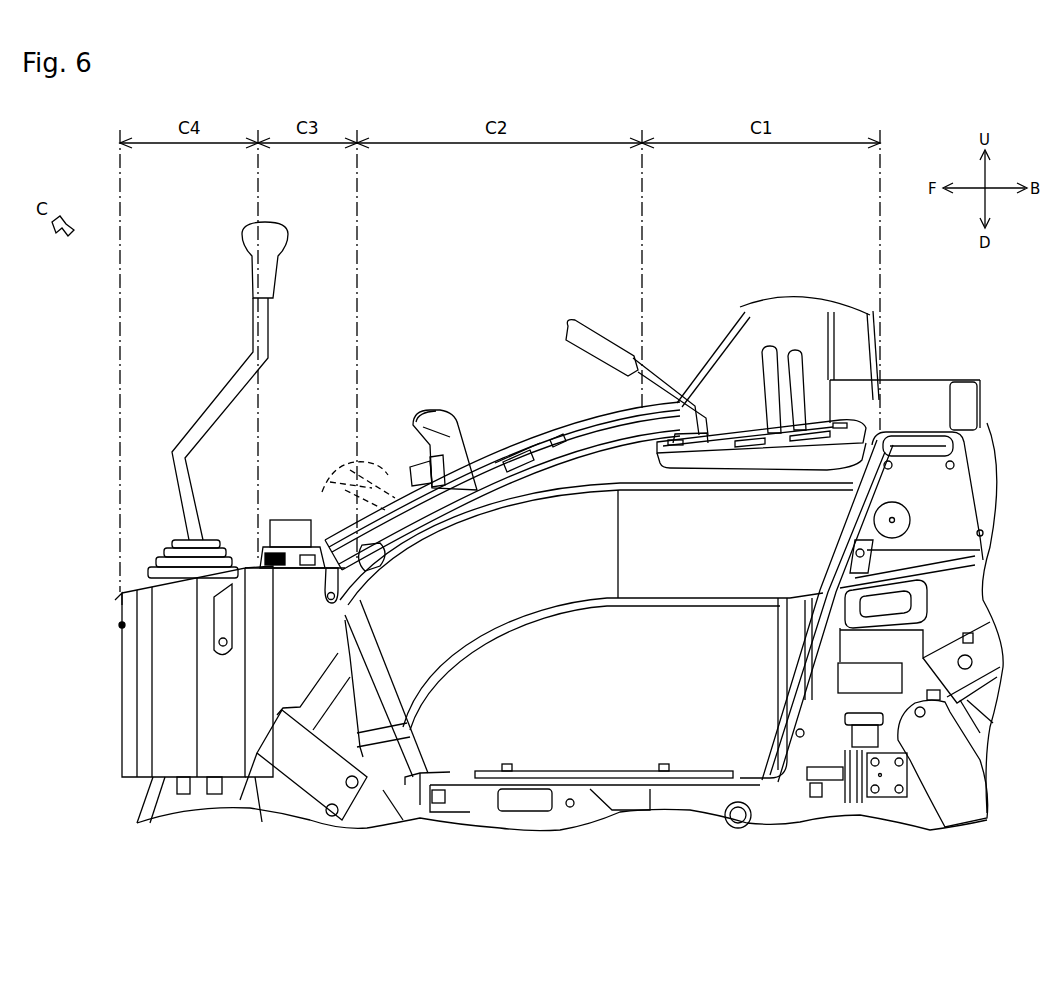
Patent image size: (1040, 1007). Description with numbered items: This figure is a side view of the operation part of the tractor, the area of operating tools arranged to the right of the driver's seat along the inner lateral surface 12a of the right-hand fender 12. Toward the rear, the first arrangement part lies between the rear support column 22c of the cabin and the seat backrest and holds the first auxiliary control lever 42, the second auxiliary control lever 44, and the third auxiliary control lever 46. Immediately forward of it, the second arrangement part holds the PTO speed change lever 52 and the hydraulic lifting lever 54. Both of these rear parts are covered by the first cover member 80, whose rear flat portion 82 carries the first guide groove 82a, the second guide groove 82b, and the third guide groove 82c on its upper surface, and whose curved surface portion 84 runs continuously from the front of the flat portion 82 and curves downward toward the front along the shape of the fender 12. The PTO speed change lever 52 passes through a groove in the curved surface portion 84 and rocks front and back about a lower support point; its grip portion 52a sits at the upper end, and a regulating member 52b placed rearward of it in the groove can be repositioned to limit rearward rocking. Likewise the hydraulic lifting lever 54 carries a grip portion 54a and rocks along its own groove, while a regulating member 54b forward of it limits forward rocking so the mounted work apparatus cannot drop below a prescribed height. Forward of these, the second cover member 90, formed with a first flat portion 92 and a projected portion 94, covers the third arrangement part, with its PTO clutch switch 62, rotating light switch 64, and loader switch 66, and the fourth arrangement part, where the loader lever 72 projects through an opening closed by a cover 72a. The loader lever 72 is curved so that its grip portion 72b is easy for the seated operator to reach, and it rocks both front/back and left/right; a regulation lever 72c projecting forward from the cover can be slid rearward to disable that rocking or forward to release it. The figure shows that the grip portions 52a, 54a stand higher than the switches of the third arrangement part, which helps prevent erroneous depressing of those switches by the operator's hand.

The fender 12 is at (521, 747).
The inner lateral surface 12a is at (628, 672).
The rear support column 22c is at (745, 313).
The first auxiliary control lever 42 is at (594, 330).
The second auxiliary control lever 44 is at (797, 350).
The third auxiliary control lever 46 is at (770, 346).
The PTO speed change lever 52 is at (410, 468).
The grip portion 52a is at (420, 445).
The regulating member 52b is at (512, 440).
The hydraulic lifting lever 54 is at (450, 404).
The grip portion 54a is at (430, 418).
The regulating member 54b is at (398, 560).
The PTO clutch switch 62 is at (284, 518).
The rotating light switch 64 is at (262, 556).
The loader switch 66 is at (292, 568).
The loader lever 72 is at (200, 396).
The cover 72a is at (180, 540).
The grip portion 72b is at (278, 230).
The regulation lever 72c is at (118, 624).
The first cover member 80 is at (550, 430).
The flat portion 82 is at (872, 428).
The first guide groove 82a is at (717, 445).
The second guide groove 82b is at (815, 445).
The third guide groove 82c is at (750, 447).
The curved surface portion 84 is at (497, 446).
The second cover member 90 is at (118, 706).
The first flat portion 92 is at (372, 602).
The projected portion 94 is at (330, 540).